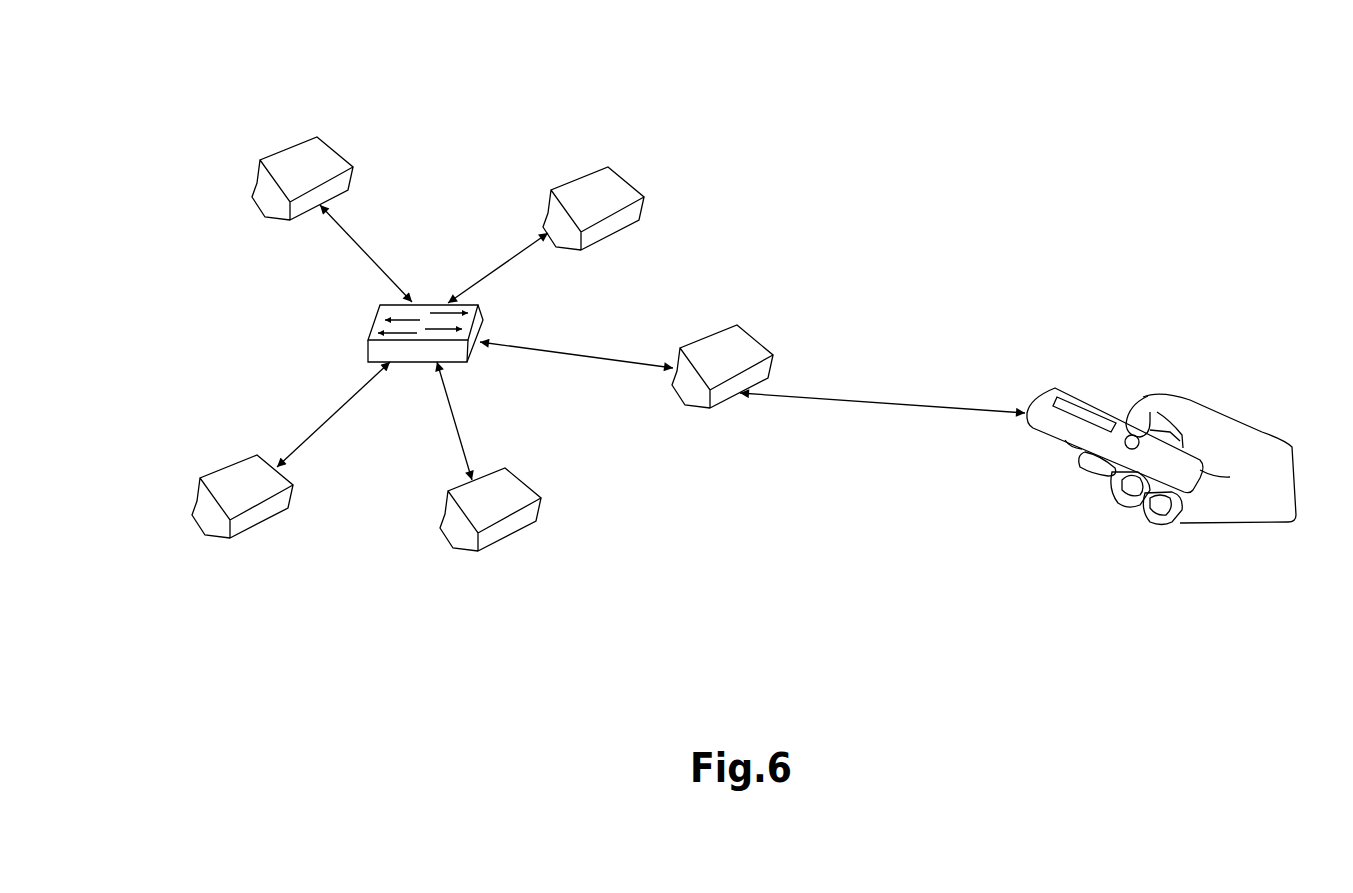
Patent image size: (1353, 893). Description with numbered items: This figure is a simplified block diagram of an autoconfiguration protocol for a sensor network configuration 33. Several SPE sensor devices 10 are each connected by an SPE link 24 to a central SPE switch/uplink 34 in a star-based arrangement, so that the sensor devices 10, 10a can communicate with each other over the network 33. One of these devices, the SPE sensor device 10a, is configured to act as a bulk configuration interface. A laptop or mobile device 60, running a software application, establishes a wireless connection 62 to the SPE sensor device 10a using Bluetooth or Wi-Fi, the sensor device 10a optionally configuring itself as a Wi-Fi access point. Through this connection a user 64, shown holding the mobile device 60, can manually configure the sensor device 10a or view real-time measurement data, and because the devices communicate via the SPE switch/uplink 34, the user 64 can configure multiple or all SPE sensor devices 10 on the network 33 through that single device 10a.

The SPE sensor device 10 is at (288, 148).
The SPE sensor device 10a is at (755, 337).
The SPE link 24 is at (370, 250).
The sensor network configuration 33 is at (838, 120).
The SPE switch/uplink 34 is at (368, 335).
The laptop or mobile device 60 is at (1097, 388).
The wireless connection 62 is at (883, 402).
The user 64 is at (1213, 452).